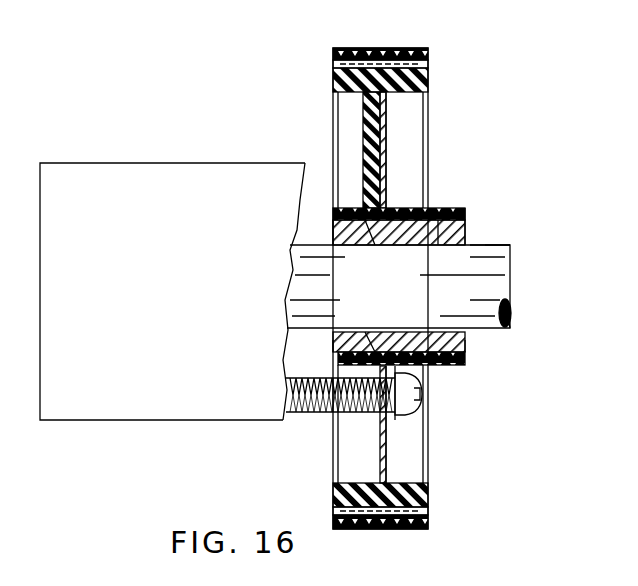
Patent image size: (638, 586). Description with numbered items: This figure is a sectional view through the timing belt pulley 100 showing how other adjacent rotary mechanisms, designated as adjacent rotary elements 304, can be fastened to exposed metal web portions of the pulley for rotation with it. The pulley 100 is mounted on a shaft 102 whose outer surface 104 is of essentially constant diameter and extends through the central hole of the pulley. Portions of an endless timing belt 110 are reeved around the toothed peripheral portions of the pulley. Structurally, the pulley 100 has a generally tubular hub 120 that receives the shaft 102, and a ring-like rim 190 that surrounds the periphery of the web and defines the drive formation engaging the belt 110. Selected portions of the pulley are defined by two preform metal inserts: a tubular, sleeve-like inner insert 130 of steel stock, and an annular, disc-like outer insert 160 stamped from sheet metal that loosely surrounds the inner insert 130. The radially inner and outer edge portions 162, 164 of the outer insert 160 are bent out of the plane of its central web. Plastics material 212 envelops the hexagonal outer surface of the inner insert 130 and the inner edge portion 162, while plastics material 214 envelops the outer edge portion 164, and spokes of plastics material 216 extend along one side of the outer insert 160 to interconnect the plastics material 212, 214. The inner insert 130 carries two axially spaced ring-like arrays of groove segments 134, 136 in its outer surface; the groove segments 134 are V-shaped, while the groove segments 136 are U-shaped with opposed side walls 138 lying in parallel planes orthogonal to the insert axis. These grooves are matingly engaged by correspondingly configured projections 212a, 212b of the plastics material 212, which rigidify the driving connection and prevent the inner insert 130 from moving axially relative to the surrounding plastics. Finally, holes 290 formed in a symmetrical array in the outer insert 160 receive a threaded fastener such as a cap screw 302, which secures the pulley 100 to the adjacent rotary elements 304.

The timing belt pulley 100 is at (437, 97).
The shaft 102 is at (502, 243).
The outer surface 104 is at (500, 266).
The endless timing belt 110 is at (358, 50).
The tubular hub 120 is at (425, 205).
The inner insert 130 is at (486, 238).
The groove segments 134 is at (350, 234).
The groove segments 136 is at (438, 222).
The side walls 138 is at (466, 226).
The outer insert 160 is at (392, 127).
The radially inner edge portion 162 is at (369, 222).
The radially outer edge portion 164 is at (387, 62).
The rim 190 is at (333, 83).
The plastics material 212 is at (437, 209).
The projections 212a is at (335, 345).
The projections 212b is at (468, 349).
The plastics material 214 is at (428, 78).
The spokes of plastics material 216 is at (368, 120).
The holes 290 is at (345, 418).
The cap screw 302 is at (297, 410).
The adjacent rotary elements 304 is at (92, 422).